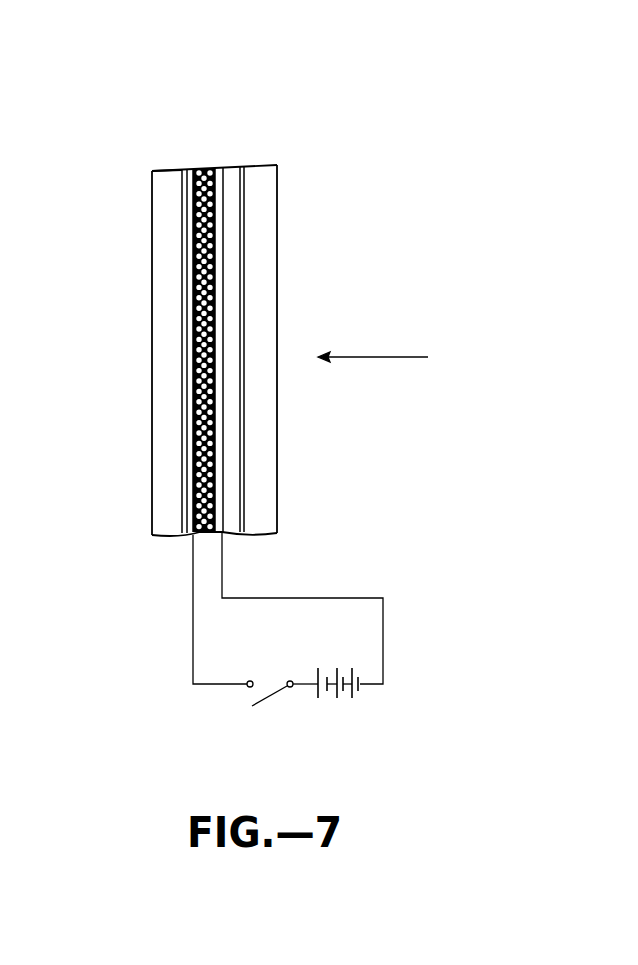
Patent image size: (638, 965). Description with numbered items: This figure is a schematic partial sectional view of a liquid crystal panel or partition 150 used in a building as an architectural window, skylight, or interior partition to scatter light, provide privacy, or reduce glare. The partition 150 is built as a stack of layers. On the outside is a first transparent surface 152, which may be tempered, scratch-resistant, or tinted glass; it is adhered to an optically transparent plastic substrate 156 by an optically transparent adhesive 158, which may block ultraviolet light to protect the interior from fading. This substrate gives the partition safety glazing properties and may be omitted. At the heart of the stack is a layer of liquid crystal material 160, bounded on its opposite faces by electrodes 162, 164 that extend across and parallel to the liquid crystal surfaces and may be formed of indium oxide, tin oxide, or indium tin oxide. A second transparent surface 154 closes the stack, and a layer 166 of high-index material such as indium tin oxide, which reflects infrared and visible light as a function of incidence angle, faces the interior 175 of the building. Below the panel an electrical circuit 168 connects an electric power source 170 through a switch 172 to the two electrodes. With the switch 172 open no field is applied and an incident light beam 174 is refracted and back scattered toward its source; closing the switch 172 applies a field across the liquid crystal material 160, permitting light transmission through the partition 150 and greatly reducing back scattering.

The liquid crystal panel or partition 150 is at (130, 283).
The first transparent surface 152 is at (267, 163).
The second transparent surface 154 is at (177, 173).
The plastic substrate 156 is at (233, 167).
The optically transparent adhesive 158 is at (245, 163).
The liquid crystal material 160 is at (205, 173).
The electrode 162 is at (190, 173).
The electrode 164 is at (220, 173).
The layer 166 is at (165, 173).
The electrical circuit 168 is at (140, 665).
The electric power source 170 is at (338, 697).
The switch 172 is at (272, 690).
The light beam 174 is at (403, 356).
The interior 175 is at (80, 400).